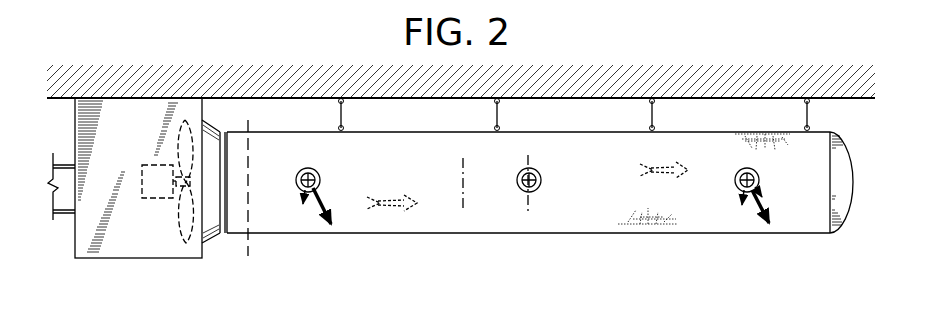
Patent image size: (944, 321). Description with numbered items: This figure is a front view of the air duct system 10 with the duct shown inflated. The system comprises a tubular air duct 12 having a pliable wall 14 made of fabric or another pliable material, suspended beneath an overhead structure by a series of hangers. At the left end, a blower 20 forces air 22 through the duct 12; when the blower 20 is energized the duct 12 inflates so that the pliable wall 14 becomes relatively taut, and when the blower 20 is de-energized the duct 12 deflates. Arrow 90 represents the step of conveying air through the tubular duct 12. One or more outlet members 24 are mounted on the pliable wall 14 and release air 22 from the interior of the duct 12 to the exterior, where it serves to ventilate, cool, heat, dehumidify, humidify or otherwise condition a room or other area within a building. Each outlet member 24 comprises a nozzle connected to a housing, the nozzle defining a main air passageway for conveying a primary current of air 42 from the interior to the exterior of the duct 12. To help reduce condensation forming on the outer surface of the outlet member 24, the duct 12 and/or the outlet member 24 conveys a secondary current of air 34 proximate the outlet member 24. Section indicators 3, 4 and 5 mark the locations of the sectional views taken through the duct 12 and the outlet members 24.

The air duct system 10 is at (203, 280).
The tubular air duct 12 is at (588, 233).
The pliable wall 14 is at (433, 215).
The blower 20 is at (180, 227).
The air 22 is at (386, 215).
The outlet member 24 is at (735, 176).
The secondary current of air 34 is at (323, 194).
The primary current of air 42 is at (331, 225).
The arrow 90 is at (380, 213).
The section line 3- 3 is at (248, 118).
The section line 4- 4 is at (463, 158).
The section line 5- 5 is at (528, 155).